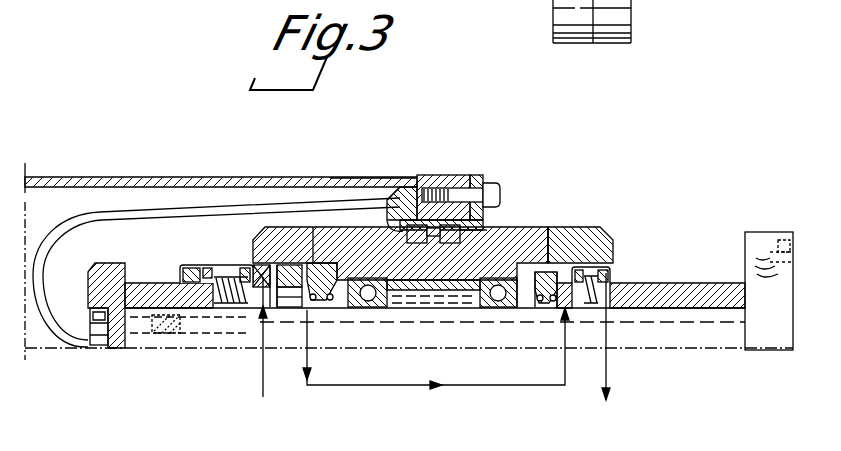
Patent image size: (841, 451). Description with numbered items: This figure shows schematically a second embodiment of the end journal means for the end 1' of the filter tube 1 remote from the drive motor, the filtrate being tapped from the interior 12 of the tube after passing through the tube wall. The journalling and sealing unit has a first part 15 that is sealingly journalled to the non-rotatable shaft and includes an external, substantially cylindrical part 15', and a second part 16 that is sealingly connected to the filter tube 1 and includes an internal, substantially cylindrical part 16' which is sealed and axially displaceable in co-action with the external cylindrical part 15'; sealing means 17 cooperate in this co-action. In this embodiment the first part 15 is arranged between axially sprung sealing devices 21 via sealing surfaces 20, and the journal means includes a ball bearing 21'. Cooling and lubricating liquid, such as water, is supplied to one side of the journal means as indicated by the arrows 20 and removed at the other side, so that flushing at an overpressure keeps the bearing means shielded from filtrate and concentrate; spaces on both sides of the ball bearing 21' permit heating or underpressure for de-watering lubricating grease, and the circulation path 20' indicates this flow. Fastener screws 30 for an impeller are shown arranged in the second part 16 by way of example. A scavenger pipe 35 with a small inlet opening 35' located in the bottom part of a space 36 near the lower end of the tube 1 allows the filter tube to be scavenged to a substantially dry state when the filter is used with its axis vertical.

The filter tube 1 is at (221, 164).
The end of the tube 1' is at (337, 164).
The interior of the tube 12 is at (73, 203).
The scavenger pipe 35 is at (216, 244).
The inlet opening of the scavenger pipe 35' is at (369, 181).
The space 36 is at (390, 193).
The second part 16 is at (437, 181).
The internal cylindrical part 16' is at (461, 181).
The fastener screws 30 is at (493, 183).
The sealing means 17 is at (487, 230).
The first part 15 is at (433, 237).
The external cylindrical part 15' is at (375, 217).
The axially sprung sealing devices 21 is at (462, 266).
The ball bearing 21' is at (432, 310).
The sealing surfaces / arrows 20 is at (432, 336).
The circulation path 20' is at (434, 365).